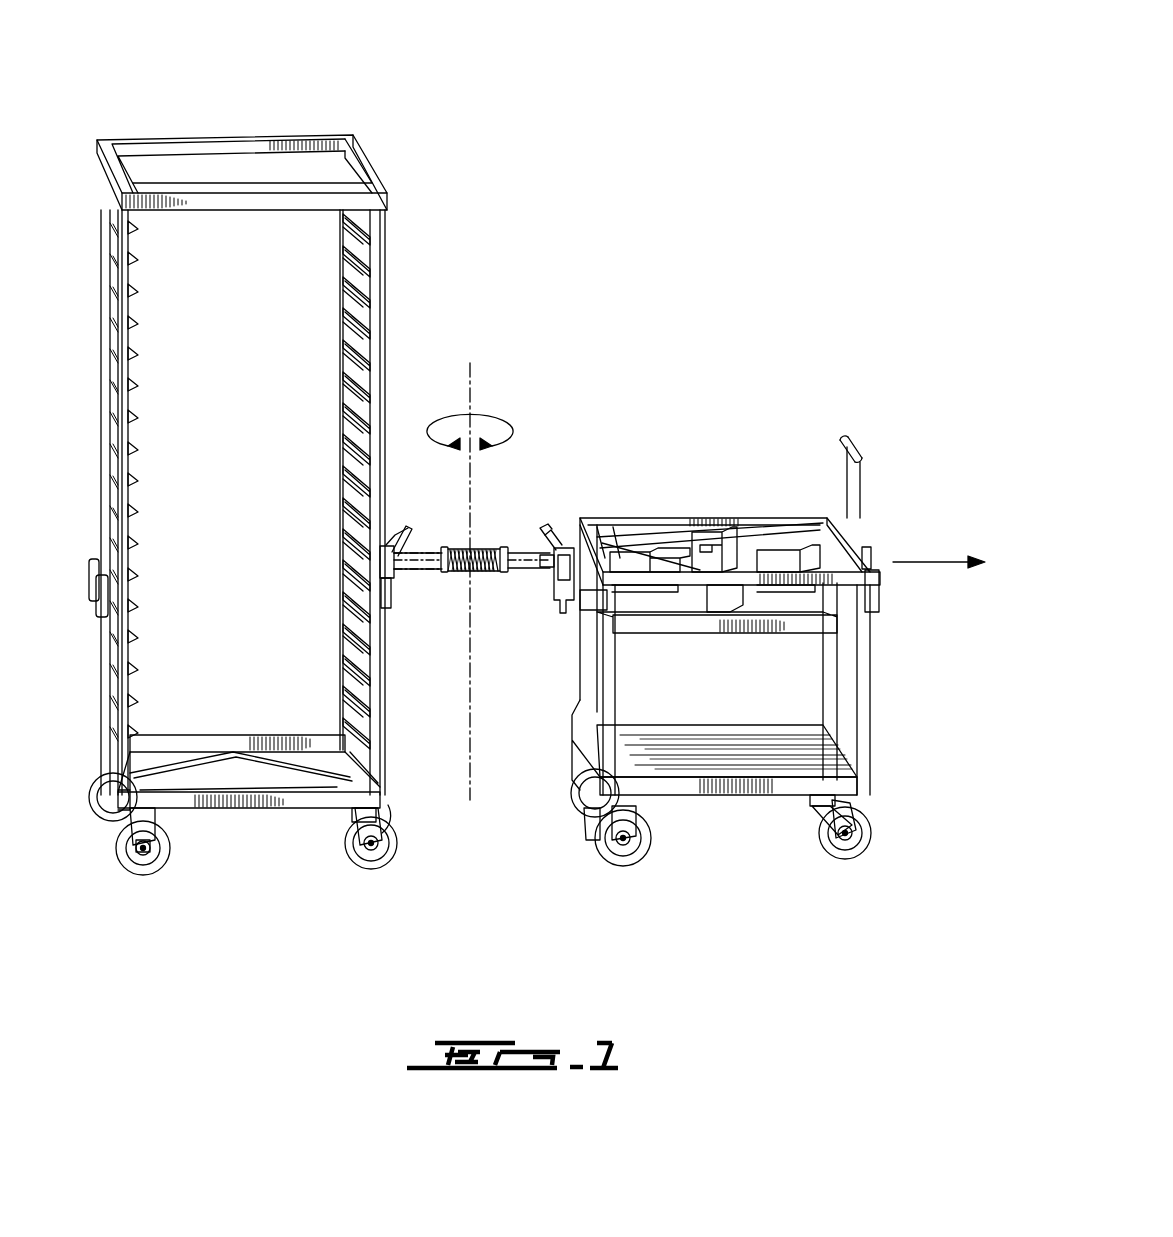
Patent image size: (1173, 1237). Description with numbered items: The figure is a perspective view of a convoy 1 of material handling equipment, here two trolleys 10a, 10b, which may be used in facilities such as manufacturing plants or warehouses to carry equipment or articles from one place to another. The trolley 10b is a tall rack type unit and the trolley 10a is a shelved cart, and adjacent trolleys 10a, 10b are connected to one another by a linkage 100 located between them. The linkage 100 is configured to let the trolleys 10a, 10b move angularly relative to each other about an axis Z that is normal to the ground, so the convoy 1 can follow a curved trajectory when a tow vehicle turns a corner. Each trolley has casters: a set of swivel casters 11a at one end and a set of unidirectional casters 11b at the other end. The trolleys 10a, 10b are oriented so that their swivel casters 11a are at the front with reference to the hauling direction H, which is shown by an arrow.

The convoy 1 is at (798, 120).
The trolley 10a is at (870, 516).
The trolley 10b is at (375, 150).
The swivel casters 11a is at (324, 833).
The unidirectional casters 11b is at (107, 813).
The linkage 100 is at (508, 526).
The axis Z is at (470, 383).
The hauling direction H is at (940, 564).